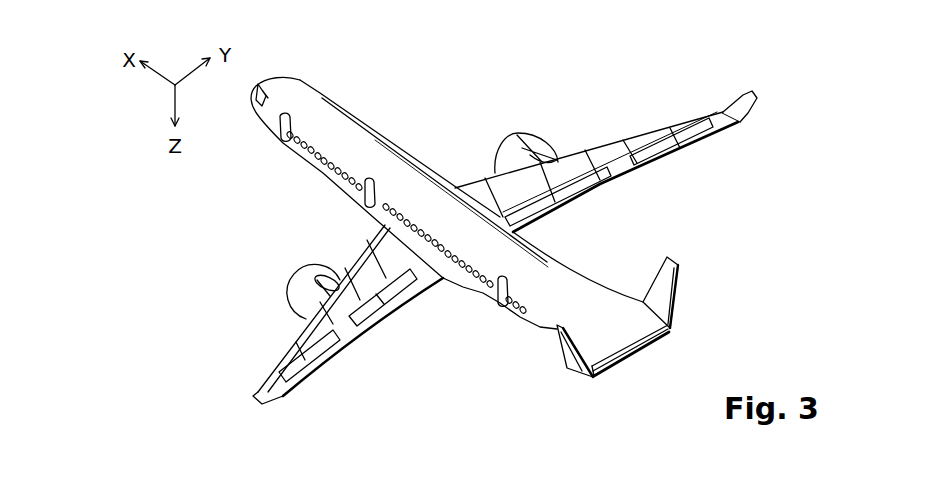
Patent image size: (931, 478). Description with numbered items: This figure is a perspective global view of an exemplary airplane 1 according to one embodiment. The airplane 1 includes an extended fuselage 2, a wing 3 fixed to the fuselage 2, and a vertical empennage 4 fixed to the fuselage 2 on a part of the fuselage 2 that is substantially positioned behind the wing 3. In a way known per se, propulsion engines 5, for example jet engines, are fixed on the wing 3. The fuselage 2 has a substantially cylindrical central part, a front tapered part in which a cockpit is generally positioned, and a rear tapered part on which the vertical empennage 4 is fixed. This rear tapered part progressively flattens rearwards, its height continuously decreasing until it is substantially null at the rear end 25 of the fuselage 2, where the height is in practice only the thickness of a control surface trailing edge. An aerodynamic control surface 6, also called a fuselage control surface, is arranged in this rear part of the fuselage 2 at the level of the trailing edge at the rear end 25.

The airplane 1 is at (424, 84).
The extended fuselage 2 is at (319, 120).
The wing 3 is at (658, 133).
The vertical empennage 4 is at (657, 287).
The propulsion engines 5 is at (526, 136).
The aerodynamic control surface 6 is at (628, 340).
The rear end 25 is at (632, 352).